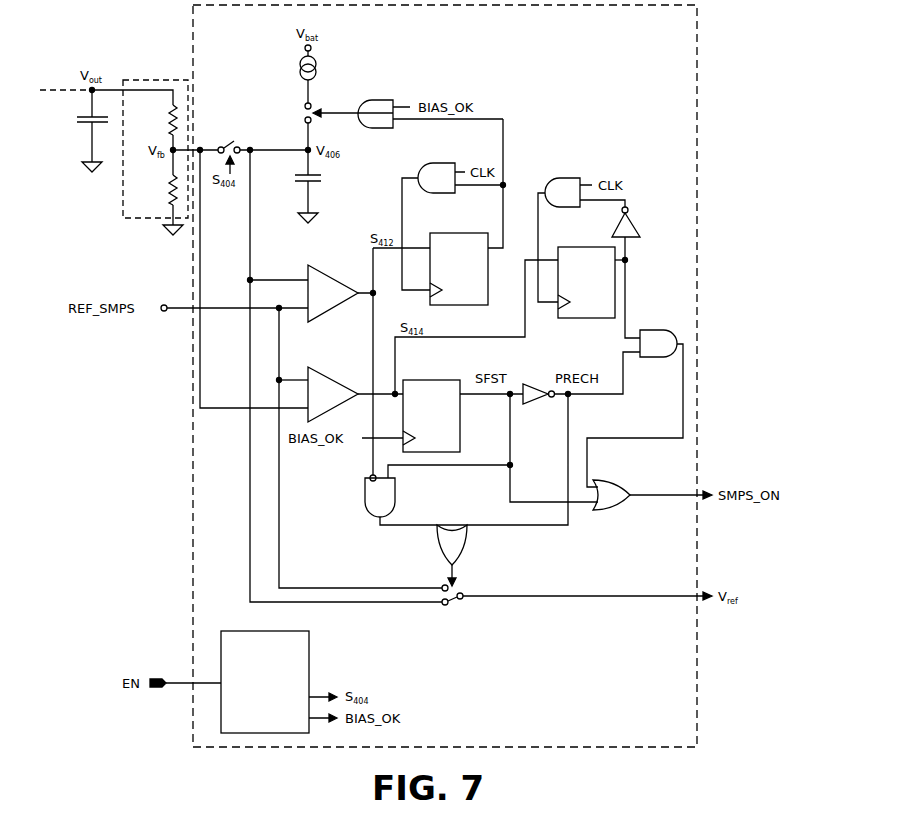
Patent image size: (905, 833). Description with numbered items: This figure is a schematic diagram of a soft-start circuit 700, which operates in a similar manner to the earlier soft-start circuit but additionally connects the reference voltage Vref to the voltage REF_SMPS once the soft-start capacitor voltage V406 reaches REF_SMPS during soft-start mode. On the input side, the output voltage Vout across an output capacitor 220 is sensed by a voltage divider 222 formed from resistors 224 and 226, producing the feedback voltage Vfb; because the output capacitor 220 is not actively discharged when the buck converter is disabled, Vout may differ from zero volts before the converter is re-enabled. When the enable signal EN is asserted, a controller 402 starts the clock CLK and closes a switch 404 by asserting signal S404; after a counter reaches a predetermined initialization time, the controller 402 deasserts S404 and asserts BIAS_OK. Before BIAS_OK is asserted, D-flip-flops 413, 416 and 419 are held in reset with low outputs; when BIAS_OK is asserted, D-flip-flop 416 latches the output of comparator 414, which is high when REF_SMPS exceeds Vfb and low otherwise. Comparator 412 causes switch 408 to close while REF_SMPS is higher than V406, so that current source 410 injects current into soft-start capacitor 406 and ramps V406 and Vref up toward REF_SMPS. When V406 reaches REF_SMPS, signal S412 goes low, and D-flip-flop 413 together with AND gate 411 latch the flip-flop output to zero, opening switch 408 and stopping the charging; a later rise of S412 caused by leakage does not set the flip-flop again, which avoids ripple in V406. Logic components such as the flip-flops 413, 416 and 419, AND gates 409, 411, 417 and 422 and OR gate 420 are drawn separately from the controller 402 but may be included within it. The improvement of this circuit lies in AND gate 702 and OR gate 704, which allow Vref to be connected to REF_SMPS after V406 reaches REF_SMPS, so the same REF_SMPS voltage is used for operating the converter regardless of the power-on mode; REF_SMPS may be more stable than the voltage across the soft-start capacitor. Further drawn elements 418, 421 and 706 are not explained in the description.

The soft-start circuit 700 is at (193, 17).
The output capacitor 220 is at (77, 121).
The voltage divider 222 is at (126, 80).
The resistor 224 is at (168, 118).
The resistor 226 is at (168, 185).
The controller 402 is at (309, 672).
The switch 404 is at (229, 141).
The soft-start capacitor 406 is at (318, 182).
The switch 408 is at (300, 112).
The AND gate 409 is at (378, 97).
The current source 410 is at (300, 64).
The AND gate 411 is at (437, 163).
The comparator 412 is at (338, 276).
The D-flip-flop 413 is at (450, 233).
The comparator 414 is at (338, 378).
The D-flip-flop 416 is at (420, 380).
The AND gate 417 is at (565, 178).
The inverter 418 is at (476, 380).
The D-flip-flop 419 is at (578, 247).
The OR gate 420 is at (612, 481).
The inverter 421 is at (634, 223).
The AND gate 422 is at (647, 329).
The AND gate 702 is at (397, 501).
The OR gate 704 is at (468, 544).
The switch 706 is at (451, 603).